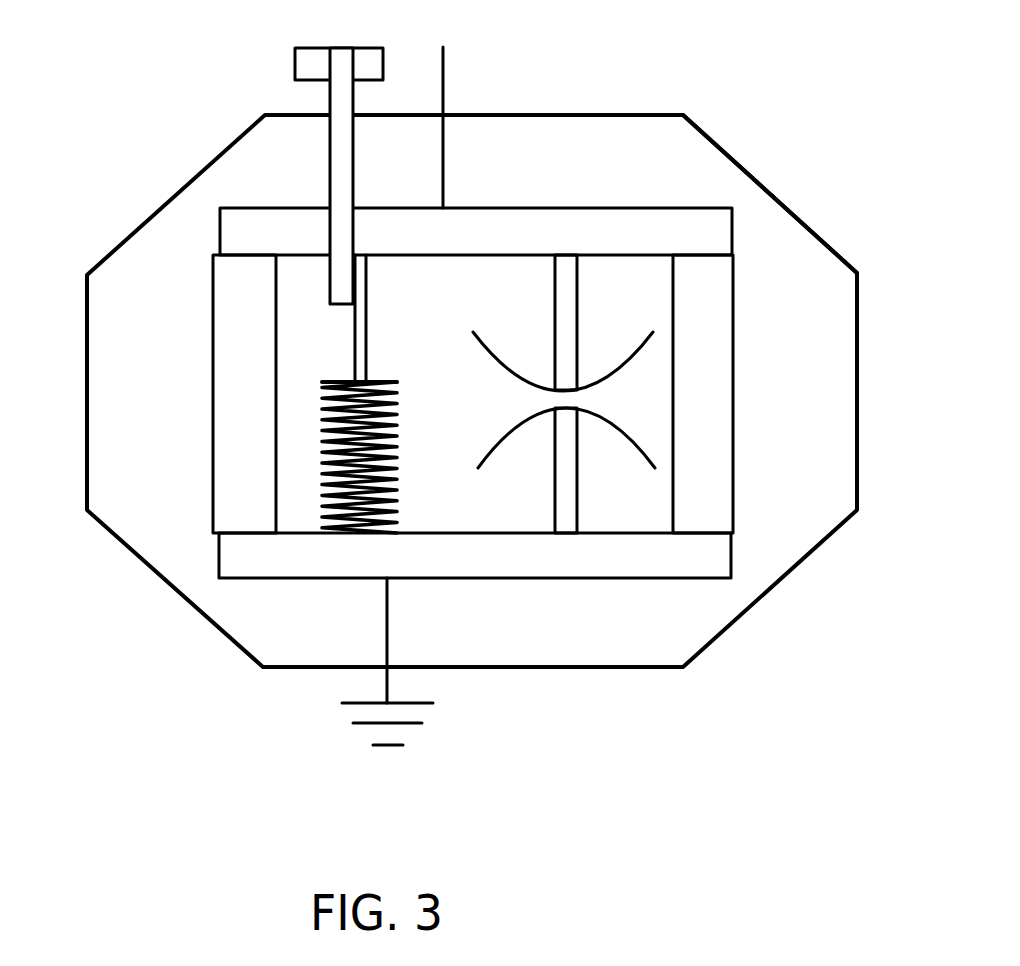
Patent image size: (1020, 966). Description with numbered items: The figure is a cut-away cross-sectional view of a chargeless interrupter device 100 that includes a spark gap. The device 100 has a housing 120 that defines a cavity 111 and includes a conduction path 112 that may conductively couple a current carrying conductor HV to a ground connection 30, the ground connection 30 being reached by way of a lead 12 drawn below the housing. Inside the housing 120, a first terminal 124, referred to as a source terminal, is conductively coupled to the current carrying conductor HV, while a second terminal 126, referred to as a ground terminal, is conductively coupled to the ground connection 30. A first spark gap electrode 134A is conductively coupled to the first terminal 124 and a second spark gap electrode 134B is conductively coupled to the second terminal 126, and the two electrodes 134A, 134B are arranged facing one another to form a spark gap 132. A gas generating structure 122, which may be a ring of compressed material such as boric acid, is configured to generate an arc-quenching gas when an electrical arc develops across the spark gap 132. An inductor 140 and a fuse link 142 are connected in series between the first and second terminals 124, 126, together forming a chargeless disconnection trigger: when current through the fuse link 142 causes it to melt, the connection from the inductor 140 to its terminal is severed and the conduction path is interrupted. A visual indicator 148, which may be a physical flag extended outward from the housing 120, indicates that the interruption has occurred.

The chargeless interrupter device 100 is at (473, 385).
The cavity 111 is at (708, 165).
The conduction path 112 is at (442, 137).
The housing 120 is at (165, 200).
The gas generating structure 122 is at (213, 459).
The first terminal 124 is at (725, 235).
The second terminal 126 is at (518, 578).
The spark gap 132 is at (583, 402).
The first spark gap electrode 134A is at (562, 335).
The second spark gap electrode 134B is at (568, 498).
The inductor 140 is at (328, 478).
The fuse link 142 is at (357, 312).
The visual indicator 148 is at (328, 193).
The ground wire 12 is at (390, 678).
The ground connection 30 is at (343, 707).